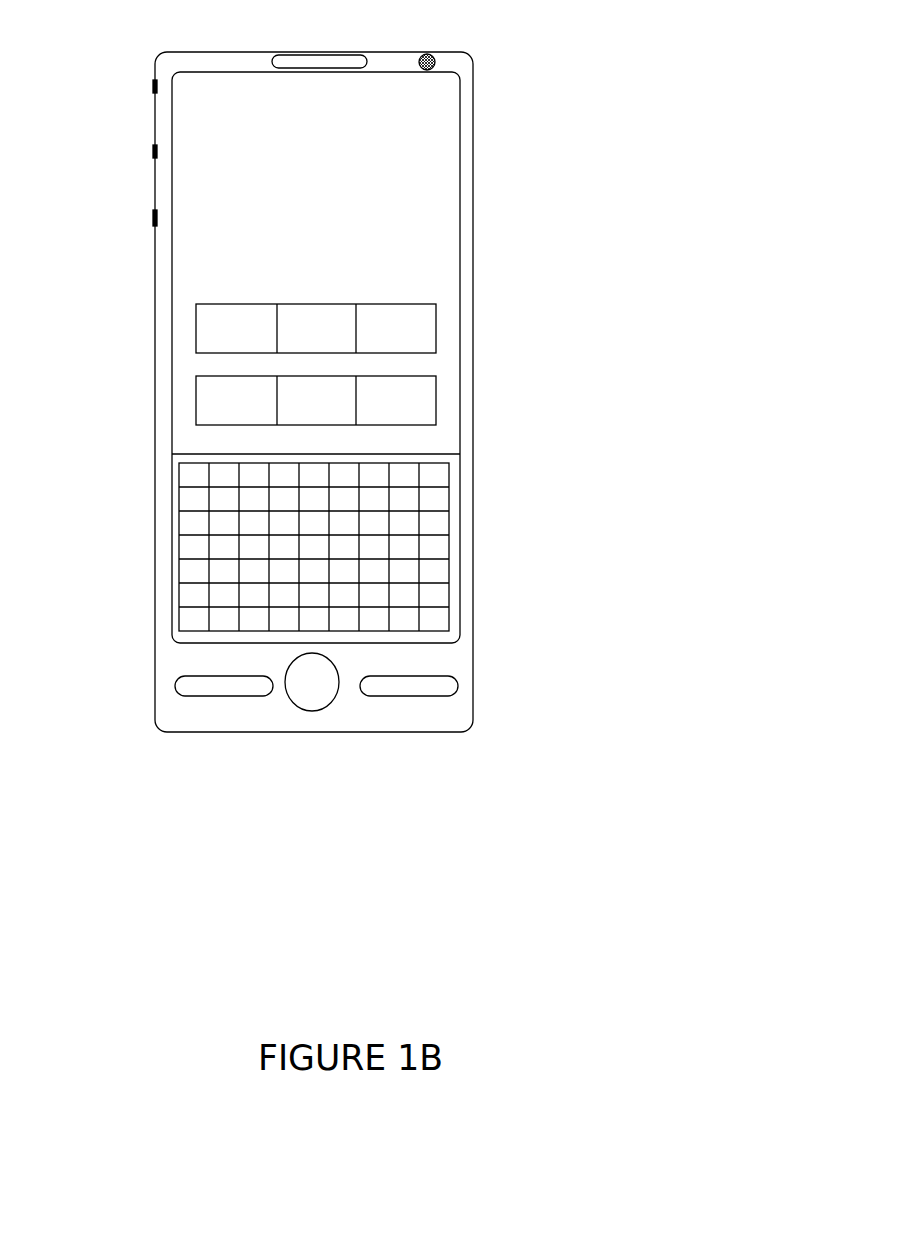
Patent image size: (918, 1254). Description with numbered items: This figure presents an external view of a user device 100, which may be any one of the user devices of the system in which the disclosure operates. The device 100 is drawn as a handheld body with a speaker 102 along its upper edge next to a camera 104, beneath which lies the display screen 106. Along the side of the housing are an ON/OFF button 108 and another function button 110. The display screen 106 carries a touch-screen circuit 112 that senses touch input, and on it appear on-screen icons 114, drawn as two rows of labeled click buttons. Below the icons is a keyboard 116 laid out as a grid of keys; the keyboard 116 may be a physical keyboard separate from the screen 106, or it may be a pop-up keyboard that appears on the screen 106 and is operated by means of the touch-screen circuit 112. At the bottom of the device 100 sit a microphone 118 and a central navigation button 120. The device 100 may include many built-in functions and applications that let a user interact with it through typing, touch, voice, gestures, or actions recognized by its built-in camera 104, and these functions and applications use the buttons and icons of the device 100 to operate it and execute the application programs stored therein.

The user device 100 is at (155, 312).
The speaker 102 is at (318, 52).
The camera 104 is at (428, 52).
The display screen 106 is at (437, 99).
The ON/OFF button 108 is at (153, 88).
The other function button 110 is at (153, 155).
The touch-screen circuit 112 is at (437, 233).
The on-screen icons 114 is at (446, 400).
The keyboard 116 is at (179, 497).
The microphone 118 is at (437, 700).
The navigation button 120 is at (315, 697).